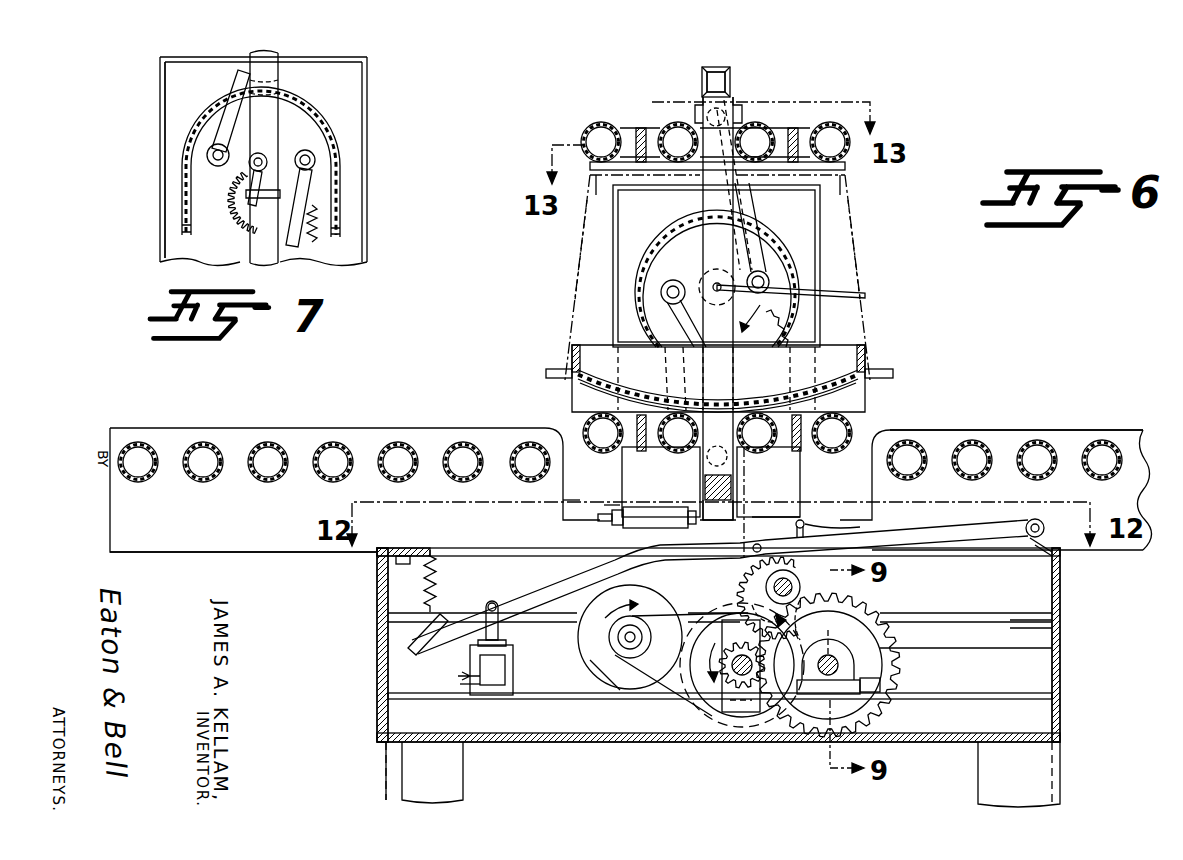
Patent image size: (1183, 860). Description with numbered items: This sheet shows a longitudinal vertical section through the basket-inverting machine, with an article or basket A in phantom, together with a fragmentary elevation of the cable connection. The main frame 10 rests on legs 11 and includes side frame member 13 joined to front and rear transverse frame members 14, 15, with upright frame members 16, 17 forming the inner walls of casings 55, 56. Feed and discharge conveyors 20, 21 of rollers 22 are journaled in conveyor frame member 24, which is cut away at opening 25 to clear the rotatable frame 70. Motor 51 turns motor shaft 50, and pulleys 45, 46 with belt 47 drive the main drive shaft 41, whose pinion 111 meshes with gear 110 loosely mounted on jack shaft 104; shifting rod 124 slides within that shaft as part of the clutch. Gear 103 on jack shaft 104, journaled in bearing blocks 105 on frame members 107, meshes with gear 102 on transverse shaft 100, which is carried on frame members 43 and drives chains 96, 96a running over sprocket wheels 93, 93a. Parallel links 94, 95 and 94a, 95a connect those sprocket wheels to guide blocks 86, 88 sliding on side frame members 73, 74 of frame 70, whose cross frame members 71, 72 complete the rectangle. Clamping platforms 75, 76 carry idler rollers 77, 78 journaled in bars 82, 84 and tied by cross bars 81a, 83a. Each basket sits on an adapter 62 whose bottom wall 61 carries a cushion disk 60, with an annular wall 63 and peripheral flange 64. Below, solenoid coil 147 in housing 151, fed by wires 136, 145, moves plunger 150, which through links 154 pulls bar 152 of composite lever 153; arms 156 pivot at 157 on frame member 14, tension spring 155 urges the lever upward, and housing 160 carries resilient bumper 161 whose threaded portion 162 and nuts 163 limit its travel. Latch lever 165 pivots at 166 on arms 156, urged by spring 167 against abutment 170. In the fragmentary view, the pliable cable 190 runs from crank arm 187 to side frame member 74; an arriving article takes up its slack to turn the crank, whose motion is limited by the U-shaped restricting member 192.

In FIG. 6, the main frame 10 is at (1066, 664).
In FIG. 6, the legs 11 is at (402, 780).
In FIG. 6, the side frame member 13 is at (592, 742).
In FIG. 6, the front transverse frame member 14 is at (1062, 590).
In FIG. 6, the rear transverse frame member 15 is at (377, 600).
In FIG. 7, the upright frame member 16 is at (168, 102).
In FIG. 6, the upright frame member 17 is at (620, 222).
In FIG. 6, the ingress conveyor 20 is at (258, 422).
In FIG. 6, the egress conveyor 21 is at (1060, 428).
In FIG. 6, the rollers 22 is at (142, 442).
In FIG. 6, the conveyor frame member 24 is at (262, 552).
In FIG. 6, the opening 25 is at (572, 502).
In FIG. 6, the main drive shaft 41 is at (745, 648).
In FIG. 6, the longitudinally extending frame members 43 is at (398, 645).
In FIG. 6, the pulley 45 is at (778, 712).
In FIG. 6, the pulley 46 is at (624, 650).
In FIG. 6, the belt 47 is at (688, 608).
In FIG. 6, the motor shaft 50 is at (640, 636).
In FIG. 6, the electric motor 51 is at (636, 590).
In FIG. 7, the upright casing 55 is at (160, 137).
In FIG. 6, the upright casing 56 is at (602, 244).
In FIG. 6, the cushion disk 60 is at (776, 374).
In FIG. 6, the wall member 61 is at (610, 390).
In FIG. 6, the adapter 62 is at (838, 346).
In FIG. 6, the annular wall 63 is at (866, 350).
In FIG. 6, the peripheral flange 64 is at (548, 373).
In FIG. 6, the rotatable frame 70 is at (728, 58).
In FIG. 6, the cross frame member 71 is at (706, 66).
In FIG. 6, the cross frame member 72 is at (705, 488).
In FIG. 7, the side frame member 73 is at (272, 62).
In FIG. 6, the side frame member 74 is at (703, 200).
In FIG. 6, the clamping platform 75 is at (856, 425).
In FIG. 6, the clamping platform 76 is at (608, 126).
In FIG. 6, the idler rollers 77 is at (586, 420).
In FIG. 6, the idler rollers 78 is at (583, 128).
In FIG. 6, the cross bar 81a is at (660, 450).
In FIG. 6, the bar 82 is at (708, 452).
In FIG. 6, the cross bar 83a is at (640, 130).
In FIG. 6, the bar 84 is at (604, 178).
In FIG. 6, the guide block 86 is at (700, 503).
In FIG. 6, the guide block 88 is at (742, 110).
In FIG. 7, the sprocket wheel 93 is at (296, 100).
In FIG. 6, the sprocket wheel 93a is at (670, 224).
In FIG. 7, the parallel link 94 is at (312, 240).
In FIG. 6, the parallel link 94a is at (674, 325).
In FIG. 7, the parallel link 95 is at (232, 78).
In FIG. 6, the parallel link 95a is at (748, 203).
In FIG. 7, the endless sprocket chain 96 is at (184, 210).
In FIG. 6, the endless sprocket chain 96a is at (672, 280).
In FIG. 6, the transverse shaft 100 is at (765, 588).
In FIG. 6, the gear 102 is at (737, 580).
In FIG. 6, the gear 103 is at (882, 650).
In FIG. 6, the jack shaft 104 is at (828, 678).
In FIG. 6, the bearing blocks 105 is at (882, 682).
In FIG. 6, the longitudinally extending frame members 107 is at (976, 704).
In FIG. 6, the gear 110 is at (858, 606).
In FIG. 6, the pinion 111 is at (708, 700).
In FIG. 6, the shifting rod 124 is at (850, 690).
In FIG. 6, the wire 136 is at (464, 688).
In FIG. 6, the wire 145 is at (460, 673).
In FIG. 6, the solenoid coil 147 is at (505, 676).
In FIG. 6, the solenoid plunger 150 is at (506, 632).
In FIG. 6, the housing 151 is at (513, 660).
In FIG. 6, the free end portion 152 is at (500, 592).
In FIG. 6, the composite lever 153 is at (952, 556).
In FIG. 6, the links 154 is at (500, 606).
In FIG. 6, the tension spring 155 is at (436, 588).
In FIG. 6, the arms 156 is at (962, 528).
In FIG. 6, the pivot 157 is at (1042, 525).
In FIG. 6, the housing 160 is at (624, 508).
In FIG. 6, the resilient bumper 161 is at (688, 518).
In FIG. 6, the reduced threaded portion 162 is at (602, 522).
In FIG. 6, the nuts 163 is at (604, 505).
In FIG. 6, the latch lever 165 is at (780, 517).
In FIG. 6, the pivot 166 is at (806, 535).
In FIG. 6, the spring 167 is at (740, 546).
In FIG. 6, the abutment 170 is at (862, 526).
In FIG. 7, the crank arm 187 is at (295, 150).
In FIG. 7, the pliable element 190 is at (248, 202).
In FIG. 6, the pliable element 190 is at (855, 292).
In FIG. 7, the restricting member 192 is at (250, 168).
In FIG. 6, the article A is at (560, 290).